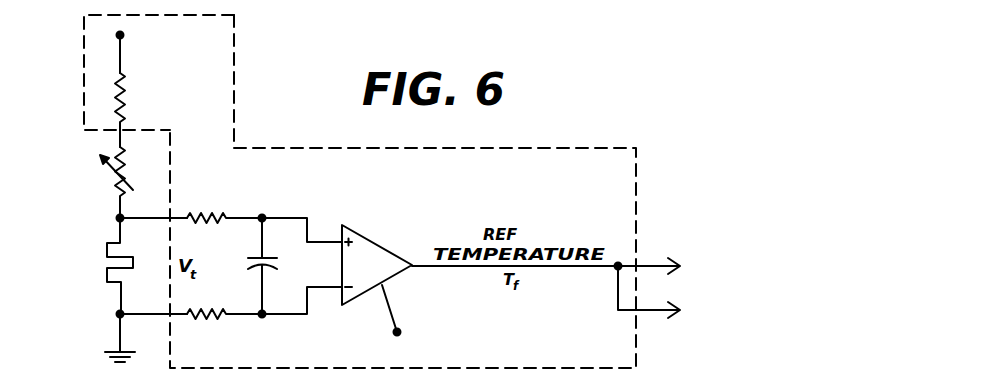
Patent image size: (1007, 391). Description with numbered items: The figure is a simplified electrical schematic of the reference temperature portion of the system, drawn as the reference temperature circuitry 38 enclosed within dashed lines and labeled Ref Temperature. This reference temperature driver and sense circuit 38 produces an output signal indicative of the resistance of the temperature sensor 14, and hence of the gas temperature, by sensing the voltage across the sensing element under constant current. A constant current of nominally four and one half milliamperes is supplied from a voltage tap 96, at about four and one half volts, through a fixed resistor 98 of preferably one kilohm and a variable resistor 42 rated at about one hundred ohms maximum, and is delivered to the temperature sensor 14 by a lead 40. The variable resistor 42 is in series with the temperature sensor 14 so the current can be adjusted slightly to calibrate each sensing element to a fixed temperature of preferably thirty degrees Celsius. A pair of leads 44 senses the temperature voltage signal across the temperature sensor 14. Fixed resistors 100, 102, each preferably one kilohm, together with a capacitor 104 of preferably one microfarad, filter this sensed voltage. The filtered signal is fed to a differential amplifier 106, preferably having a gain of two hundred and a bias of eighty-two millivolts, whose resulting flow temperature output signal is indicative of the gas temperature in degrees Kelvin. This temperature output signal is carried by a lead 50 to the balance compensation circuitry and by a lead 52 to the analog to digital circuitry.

The temperature sensor 14 is at (105, 273).
The reference temperature circuitry 38 is at (552, 148).
The lead 40 is at (118, 134).
The variable resistor 42 is at (110, 182).
The leads 44 is at (147, 219).
The lead 50 is at (650, 266).
The lead 52 is at (646, 312).
The voltage tap 96 is at (123, 35).
The fixed resistor 98 is at (123, 98).
The fixed resistor 100 is at (223, 215).
The fixed resistor 102 is at (225, 319).
The capacitor 104 is at (268, 266).
The differential amplifier 106 is at (378, 245).